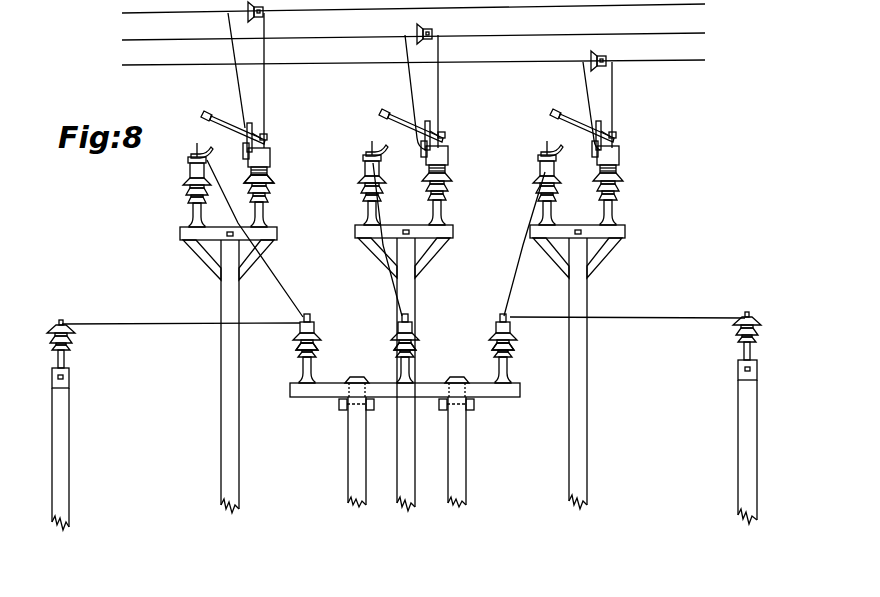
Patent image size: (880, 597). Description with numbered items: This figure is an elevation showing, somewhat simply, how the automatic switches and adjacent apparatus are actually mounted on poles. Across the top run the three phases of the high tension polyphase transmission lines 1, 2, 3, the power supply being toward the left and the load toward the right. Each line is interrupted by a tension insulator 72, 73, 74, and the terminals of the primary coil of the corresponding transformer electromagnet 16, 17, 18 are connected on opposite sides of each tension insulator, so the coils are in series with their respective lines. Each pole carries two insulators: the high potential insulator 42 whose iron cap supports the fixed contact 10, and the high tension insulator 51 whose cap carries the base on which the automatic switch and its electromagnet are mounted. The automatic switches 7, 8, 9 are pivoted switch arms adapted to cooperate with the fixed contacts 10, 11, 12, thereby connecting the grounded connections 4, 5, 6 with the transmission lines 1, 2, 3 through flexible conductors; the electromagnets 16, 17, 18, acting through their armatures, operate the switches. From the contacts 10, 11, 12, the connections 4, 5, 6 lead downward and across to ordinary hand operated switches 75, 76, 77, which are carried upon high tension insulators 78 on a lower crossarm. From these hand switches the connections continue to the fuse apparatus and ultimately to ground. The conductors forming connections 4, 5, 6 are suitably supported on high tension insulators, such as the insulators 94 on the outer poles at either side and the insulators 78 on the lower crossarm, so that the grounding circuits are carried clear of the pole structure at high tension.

The transmission line 1 is at (352, 14).
The transmission line 2 is at (506, 33).
The transmission line 3 is at (668, 62).
The connection 4 is at (281, 283).
The connection 5 is at (383, 217).
The connection 6 is at (515, 282).
The automatic switch 7 is at (207, 112).
The automatic switch 8 is at (386, 112).
The automatic switch 9 is at (560, 110).
The fixed contact 10 is at (210, 149).
The fixed contact 11 is at (387, 150).
The fixed contact 12 is at (560, 150).
The transformer electromagnet 16 is at (272, 156).
The transformer electromagnet 17 is at (449, 157).
The transformer electromagnet 18 is at (620, 157).
The high potential insulator 42 is at (186, 183).
The high tension insulator 51 is at (276, 184).
The tension insulator 72 is at (254, 19).
The tension insulator 73 is at (428, 30).
The tension insulator 74 is at (607, 54).
The hand operated switch 75 is at (311, 318).
The hand operated switch 76 is at (412, 318).
The hand operated switch 77 is at (511, 318).
The high tension insulator 78 is at (320, 349).
The high tension insulator 94 is at (73, 343).